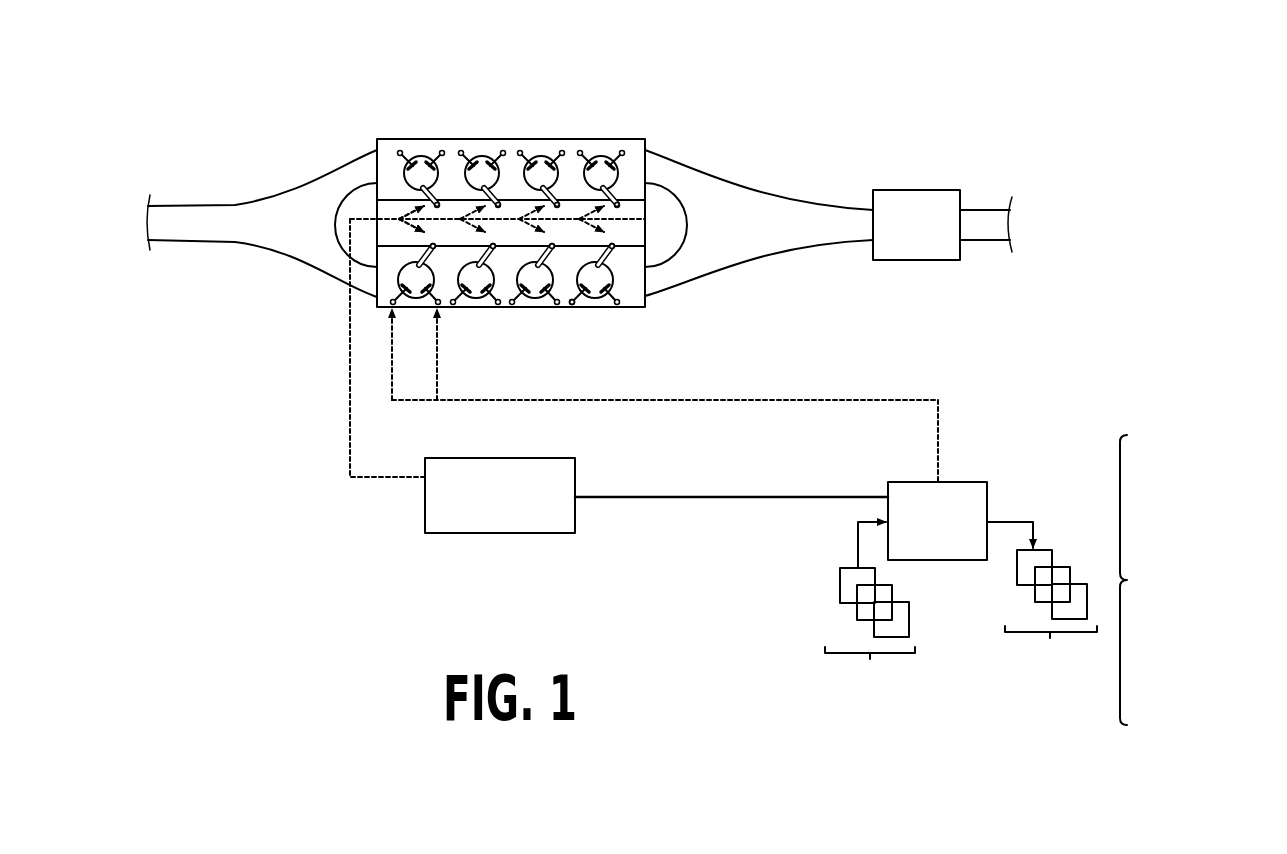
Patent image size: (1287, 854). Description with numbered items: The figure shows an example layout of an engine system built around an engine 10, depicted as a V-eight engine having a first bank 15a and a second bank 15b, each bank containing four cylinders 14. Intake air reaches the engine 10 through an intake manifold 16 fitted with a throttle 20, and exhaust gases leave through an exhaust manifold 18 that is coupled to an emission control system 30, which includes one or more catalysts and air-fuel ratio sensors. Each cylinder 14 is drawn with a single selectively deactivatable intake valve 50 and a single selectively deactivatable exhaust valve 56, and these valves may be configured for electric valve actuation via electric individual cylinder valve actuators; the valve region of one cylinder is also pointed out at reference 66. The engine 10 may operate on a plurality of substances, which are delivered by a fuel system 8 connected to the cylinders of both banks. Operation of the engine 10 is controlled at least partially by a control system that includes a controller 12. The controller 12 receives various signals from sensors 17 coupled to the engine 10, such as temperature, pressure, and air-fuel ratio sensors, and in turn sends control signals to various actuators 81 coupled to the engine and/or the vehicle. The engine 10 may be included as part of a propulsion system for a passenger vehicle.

The engine 10 is at (650, 110).
The cylinder 14 is at (613, 183).
The intake valve 66 is at (412, 180).
The first bank 15a is at (428, 139).
The second bank 15b is at (447, 310).
The intake manifold 16 is at (253, 197).
The throttle 20 is at (229, 214).
The exhaust manifold 18 is at (712, 187).
The emission control system 30 is at (915, 190).
The intake valve 50 is at (573, 306).
The exhaust valve 56 is at (606, 305).
The fuel system 8 is at (565, 507).
The controller 12 is at (937, 521).
The sensors 17 is at (870, 614).
The actuators 81 is at (1042, 603).